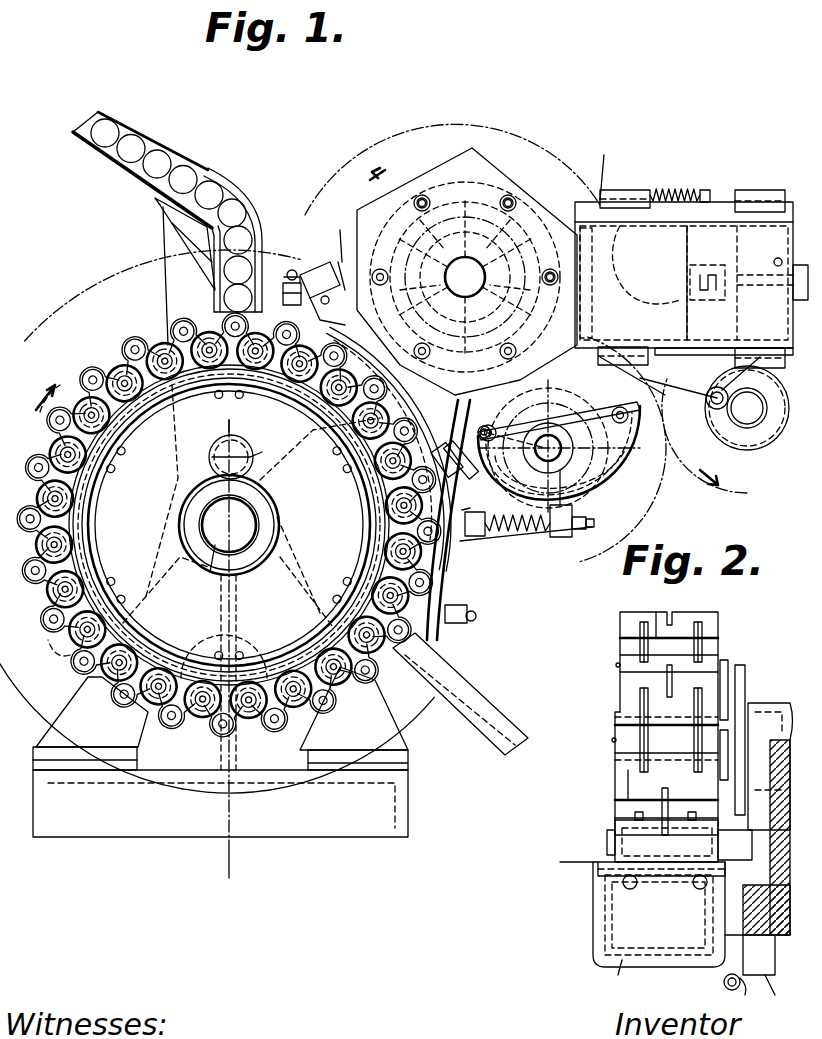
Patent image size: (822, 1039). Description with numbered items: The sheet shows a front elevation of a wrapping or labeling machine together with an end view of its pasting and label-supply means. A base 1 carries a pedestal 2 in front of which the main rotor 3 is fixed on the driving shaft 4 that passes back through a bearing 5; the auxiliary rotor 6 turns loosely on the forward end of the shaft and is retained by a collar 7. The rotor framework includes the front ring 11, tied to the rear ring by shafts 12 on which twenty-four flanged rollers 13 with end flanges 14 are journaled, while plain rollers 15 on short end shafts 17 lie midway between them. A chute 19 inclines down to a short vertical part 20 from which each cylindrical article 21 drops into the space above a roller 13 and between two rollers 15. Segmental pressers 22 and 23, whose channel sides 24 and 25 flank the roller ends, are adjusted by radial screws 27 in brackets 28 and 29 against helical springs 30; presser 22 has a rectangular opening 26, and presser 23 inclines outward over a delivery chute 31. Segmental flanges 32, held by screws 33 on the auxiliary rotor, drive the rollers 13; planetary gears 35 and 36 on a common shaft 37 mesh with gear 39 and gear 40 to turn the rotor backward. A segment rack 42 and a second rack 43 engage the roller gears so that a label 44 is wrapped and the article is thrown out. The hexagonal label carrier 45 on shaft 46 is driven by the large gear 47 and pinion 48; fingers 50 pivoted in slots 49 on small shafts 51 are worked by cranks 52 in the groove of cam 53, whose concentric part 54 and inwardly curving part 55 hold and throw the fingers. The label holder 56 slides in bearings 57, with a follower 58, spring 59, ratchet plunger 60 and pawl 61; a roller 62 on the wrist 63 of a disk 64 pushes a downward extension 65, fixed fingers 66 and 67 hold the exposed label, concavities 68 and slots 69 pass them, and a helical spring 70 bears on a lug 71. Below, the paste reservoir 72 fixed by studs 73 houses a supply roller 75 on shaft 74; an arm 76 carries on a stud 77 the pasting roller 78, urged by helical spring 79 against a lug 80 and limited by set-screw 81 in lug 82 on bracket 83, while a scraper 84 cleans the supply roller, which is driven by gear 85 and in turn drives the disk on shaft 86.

In FIG. 1, the base 1 is at (408, 778).
In FIG. 1, the pedestal 2 is at (130, 730).
In FIG. 2, the pedestal 2 is at (776, 819).
In FIG. 1, the main rotor 3 is at (345, 695).
In FIG. 1, the driving shaft 4 is at (250, 505).
In FIG. 1, the bearing 5 is at (262, 470).
In FIG. 1, the auxiliary rotor 6 is at (320, 655).
In FIG. 1, the collar 7 is at (258, 525).
In FIG. 1, the front ring 11 is at (160, 392).
In FIG. 1, the shafts 12 is at (126, 385).
In FIG. 1, the rollers 13 is at (148, 340).
In FIG. 1, the flanges 14 is at (118, 330).
In FIG. 1, the plain rollers 15 is at (82, 370).
In FIG. 1, the end shafts 17 is at (103, 375).
In FIG. 1, the chute 19 is at (115, 165).
In FIG. 1, the vertical part 20 is at (280, 265).
In FIG. 1, the cylindrical article 21 is at (245, 200).
In FIG. 1, the presser 22 is at (332, 250).
In FIG. 1, the presser 23 is at (477, 475).
In FIG. 1, the sides 24 is at (430, 420).
In FIG. 1, the sides 25 is at (442, 580).
In FIG. 1, the rectangular opening 26 is at (318, 290).
In FIG. 1, the radial screws 27 is at (500, 627).
In FIG. 1, the bracket 28 is at (290, 265).
In FIG. 1, the bracket 29 is at (463, 460).
In FIG. 1, the helical springs 30 is at (315, 265).
In FIG. 1, the delivery chute 31 is at (490, 690).
In FIG. 1, the segmental flanges 32 is at (90, 555).
In FIG. 1, the screws 33 is at (112, 478).
In FIG. 1, the planetary gear 35 is at (209, 455).
In FIG. 1, the planetary gear 36 is at (227, 419).
In FIG. 1, the common shaft 37 is at (262, 452).
In FIG. 1, the gear 39 is at (185, 505).
In FIG. 1, the gear 40 is at (203, 565).
In FIG. 1, the segment rack 42 is at (370, 455).
In FIG. 1, the segment rack 43 is at (420, 640).
In FIG. 1, the label 44 is at (412, 200).
In FIG. 1, the label carrier 45 is at (480, 175).
In FIG. 2, the label carrier 45 is at (620, 690).
In FIG. 1, the shaft 46 is at (449, 255).
In FIG. 2, the shaft 46 is at (615, 735).
In FIG. 1, the large gear 47 is at (104, 290).
In FIG. 1, the pinion 48 is at (470, 300).
In FIG. 1, the slots 49 is at (470, 150).
In FIG. 2, the slots 49 is at (640, 632).
In FIG. 1, the hook-shaped fingers 50 is at (510, 200).
In FIG. 2, the hook-shaped fingers 50 is at (640, 650).
In FIG. 1, the small shafts 51 is at (425, 195).
In FIG. 2, the small shafts 51 is at (618, 665).
In FIG. 1, the cranks 52 is at (510, 290).
In FIG. 2, the cranks 52 is at (728, 675).
In FIG. 1, the cam 53 is at (589, 295).
In FIG. 2, the cam 53 is at (745, 685).
In FIG. 1, the concentric part 54 is at (587, 227).
In FIG. 1, the radially inwardly curving part 55 is at (419, 233).
In FIG. 1, the label holder 56 is at (712, 220).
In FIG. 1, the bearings 57 is at (620, 190).
In FIG. 1, the follower 58 is at (690, 262).
In FIG. 1, the spring 59 is at (690, 270).
In FIG. 1, the ratchet plunger 60 is at (760, 275).
In FIG. 1, the pawl 61 is at (779, 250).
In FIG. 1, the roller 62 is at (727, 415).
In FIG. 1, the wrist 63 is at (706, 405).
In FIG. 1, the disk 64 is at (775, 440).
In FIG. 1, the downward extension 65 is at (680, 377).
In FIG. 1, the fixed fingers 66 is at (642, 265).
In FIG. 1, the fixed fingers 67 is at (607, 168).
In FIG. 1, the concavities 68 is at (558, 132).
In FIG. 2, the concavities 68 is at (656, 612).
In FIG. 1, the slots 69 is at (470, 150).
In FIG. 2, the slots 69 is at (672, 612).
In FIG. 1, the helical spring 70 is at (670, 188).
In FIG. 1, the lug 71 is at (708, 190).
In FIG. 1, the paste reservoir 72 is at (614, 470).
In FIG. 2, the paste reservoir 72 is at (593, 920).
In FIG. 1, the studs 73 is at (640, 386).
In FIG. 2, the studs 73 is at (598, 870).
In FIG. 1, the shaft 74 is at (600, 458).
In FIG. 2, the shaft 74 is at (662, 910).
In FIG. 1, the supply roller 75 is at (612, 418).
In FIG. 2, the supply roller 75 is at (629, 977).
In FIG. 1, the arm 76 is at (560, 537).
In FIG. 2, the arm 76 is at (735, 965).
In FIG. 1, the stud 77 is at (548, 403).
In FIG. 2, the stud 77 is at (607, 845).
In FIG. 1, the pasting roller 78 is at (562, 430).
In FIG. 2, the pasting roller 78 is at (615, 825).
In FIG. 1, the helical spring 79 is at (505, 537).
In FIG. 1, the lug 80 is at (470, 536).
In FIG. 1, the set-screw 81 is at (580, 529).
In FIG. 2, the set-screw 81 is at (730, 990).
In FIG. 1, the lug 82 is at (590, 519).
In FIG. 2, the lug 82 is at (753, 1000).
In FIG. 1, the bracket 83 is at (520, 533).
In FIG. 2, the bracket 83 is at (778, 1004).
In FIG. 1, the scraper 84 is at (487, 438).
In FIG. 2, the scraper 84 is at (568, 855).
In FIG. 1, the gear 85 is at (520, 112).
In FIG. 1, the shaft 86 is at (747, 450).